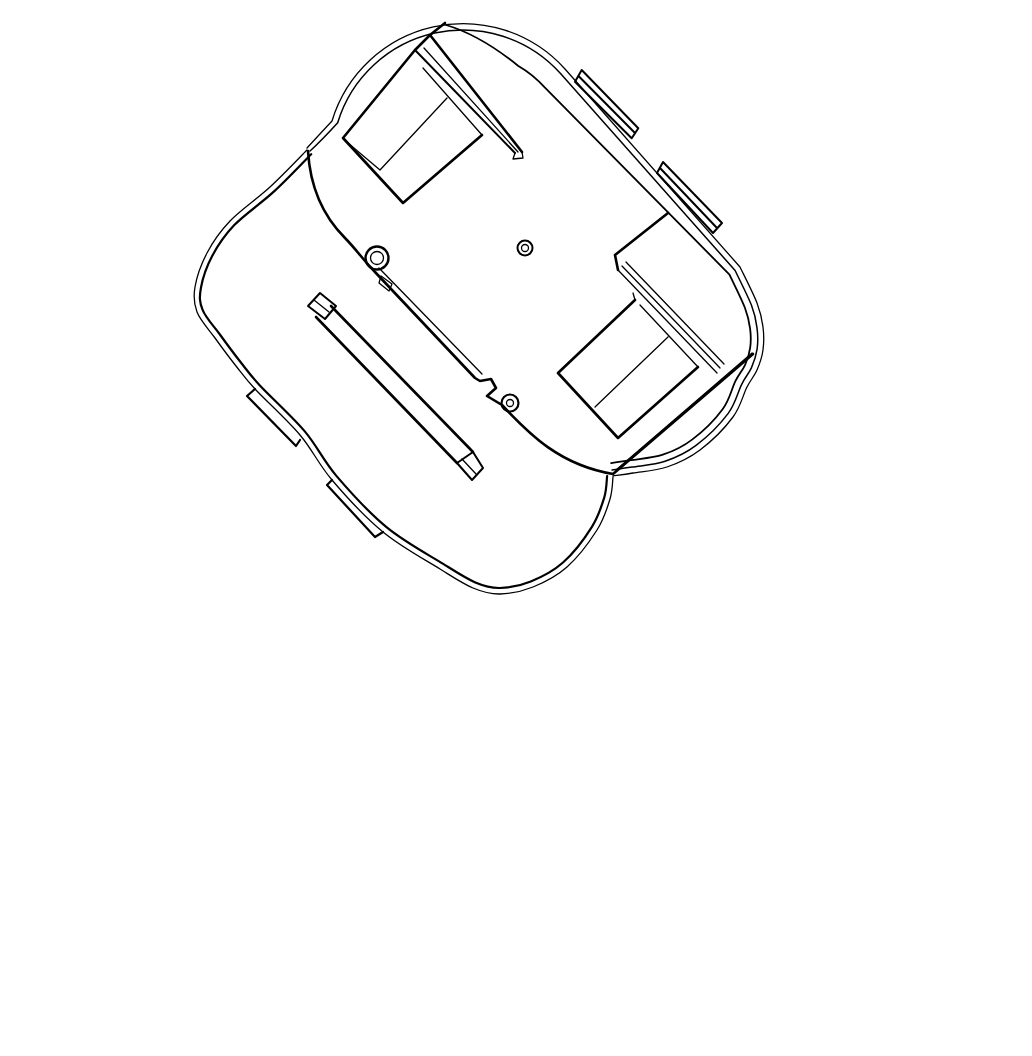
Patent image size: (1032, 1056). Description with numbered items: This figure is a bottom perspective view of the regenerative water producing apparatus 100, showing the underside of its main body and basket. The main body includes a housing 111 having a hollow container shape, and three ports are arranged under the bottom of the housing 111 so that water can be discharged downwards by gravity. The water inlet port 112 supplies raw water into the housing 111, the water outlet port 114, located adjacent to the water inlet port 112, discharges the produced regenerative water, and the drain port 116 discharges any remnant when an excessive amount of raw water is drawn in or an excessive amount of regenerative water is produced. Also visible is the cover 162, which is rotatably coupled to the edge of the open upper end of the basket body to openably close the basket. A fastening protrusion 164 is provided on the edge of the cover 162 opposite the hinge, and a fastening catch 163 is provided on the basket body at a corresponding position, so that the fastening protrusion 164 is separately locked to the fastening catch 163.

The regenerative water producing apparatus 100 is at (242, 45).
The housing 111 is at (732, 273).
The water inlet port 112 is at (508, 412).
The water outlet port 114 is at (526, 258).
The drain port 116 is at (362, 260).
The cover 162 is at (257, 312).
The fastening catch 163 is at (690, 188).
The fastening protrusion 164 is at (276, 428).